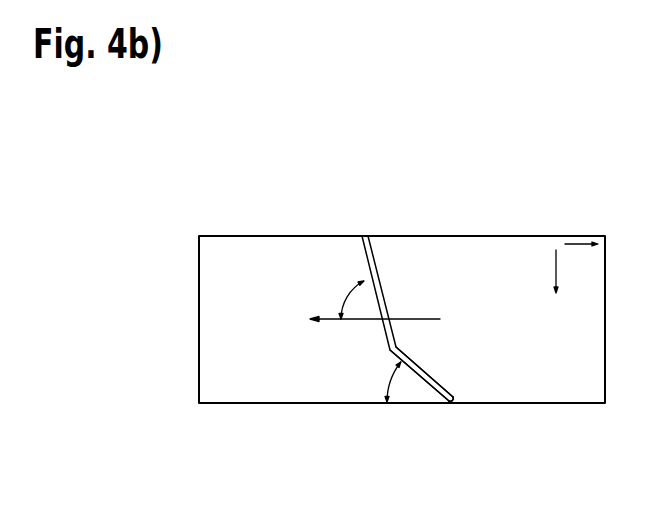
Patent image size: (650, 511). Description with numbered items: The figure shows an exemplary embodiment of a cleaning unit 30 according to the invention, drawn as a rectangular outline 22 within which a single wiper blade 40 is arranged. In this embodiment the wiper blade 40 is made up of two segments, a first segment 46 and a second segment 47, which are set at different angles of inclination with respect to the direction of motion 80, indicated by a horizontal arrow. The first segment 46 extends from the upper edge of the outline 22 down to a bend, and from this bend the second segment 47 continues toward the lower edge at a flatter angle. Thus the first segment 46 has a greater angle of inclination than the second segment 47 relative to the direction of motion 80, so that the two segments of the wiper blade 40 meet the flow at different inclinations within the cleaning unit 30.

The flow channel / housing 22 is at (476, 253).
The cleaning unit 30 is at (416, 207).
The first segment 46 is at (383, 289).
The wiper blade 40 is at (450, 398).
The second segment 47 is at (434, 377).
The direction of motion 80 is at (334, 322).